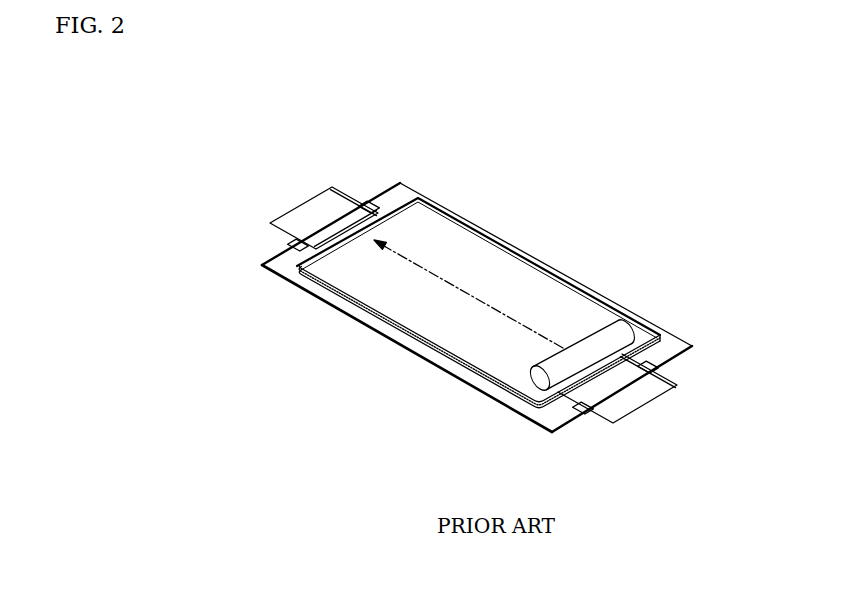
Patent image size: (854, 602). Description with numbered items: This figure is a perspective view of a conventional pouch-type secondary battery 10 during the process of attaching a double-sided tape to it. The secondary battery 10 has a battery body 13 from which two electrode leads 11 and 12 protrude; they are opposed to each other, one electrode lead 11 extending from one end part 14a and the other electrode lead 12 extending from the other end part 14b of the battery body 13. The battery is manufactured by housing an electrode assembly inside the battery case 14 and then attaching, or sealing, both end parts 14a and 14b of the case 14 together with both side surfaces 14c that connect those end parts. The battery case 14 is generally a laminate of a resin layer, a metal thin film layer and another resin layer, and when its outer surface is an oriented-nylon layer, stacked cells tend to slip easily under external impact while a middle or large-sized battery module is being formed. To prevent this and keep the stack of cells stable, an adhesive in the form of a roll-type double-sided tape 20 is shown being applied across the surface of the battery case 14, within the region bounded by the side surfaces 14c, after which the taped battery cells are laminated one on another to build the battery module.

The secondary battery 10 is at (464, 74).
The electrode lead 11 is at (312, 203).
The electrode lead 12 is at (650, 402).
The battery body 13 is at (505, 262).
The battery case 14 is at (672, 332).
The one end part 14a is at (399, 190).
The other end part 14b is at (553, 415).
The side surfaces 14c is at (573, 280).
The roll-type double-sided tape 20 is at (617, 320).